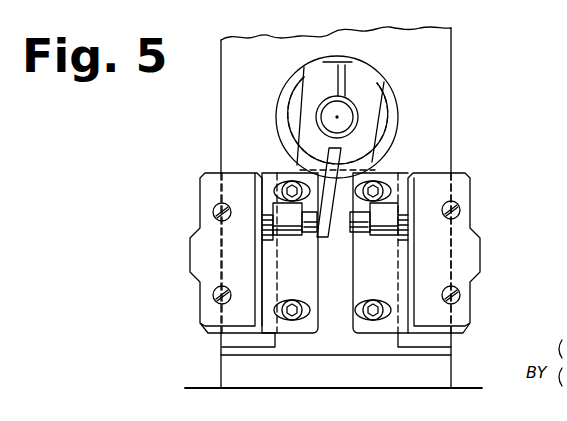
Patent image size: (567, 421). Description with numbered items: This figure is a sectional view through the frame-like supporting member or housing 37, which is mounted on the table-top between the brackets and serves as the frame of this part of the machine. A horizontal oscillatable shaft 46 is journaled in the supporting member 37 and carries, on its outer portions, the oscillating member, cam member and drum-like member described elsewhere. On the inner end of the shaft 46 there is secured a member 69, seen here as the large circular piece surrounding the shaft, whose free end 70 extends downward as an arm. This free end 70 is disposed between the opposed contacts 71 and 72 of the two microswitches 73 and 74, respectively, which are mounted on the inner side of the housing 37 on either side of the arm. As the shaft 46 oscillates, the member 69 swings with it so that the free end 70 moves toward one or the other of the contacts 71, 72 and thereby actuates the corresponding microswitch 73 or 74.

The supporting member 37 is at (447, 104).
The oscillatable shaft 46 is at (333, 115).
The member 69 is at (372, 90).
The free end 70 is at (320, 242).
The contact 71 is at (312, 237).
The contact 72 is at (355, 236).
The microswitch 73 is at (463, 314).
The microswitch 74 is at (203, 202).